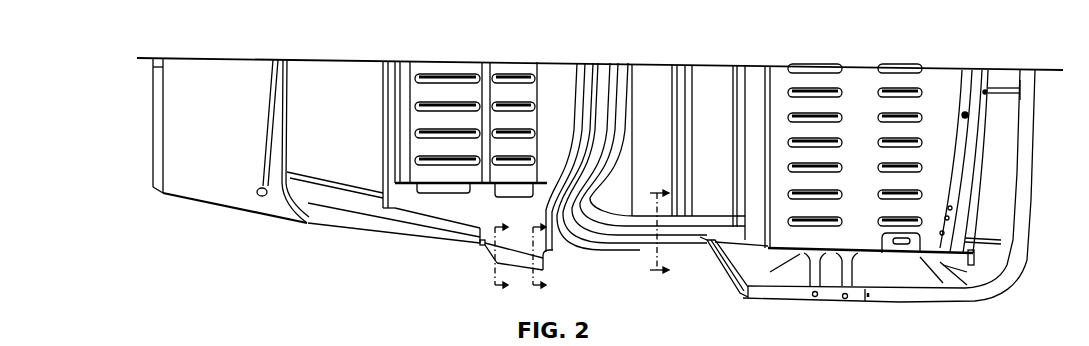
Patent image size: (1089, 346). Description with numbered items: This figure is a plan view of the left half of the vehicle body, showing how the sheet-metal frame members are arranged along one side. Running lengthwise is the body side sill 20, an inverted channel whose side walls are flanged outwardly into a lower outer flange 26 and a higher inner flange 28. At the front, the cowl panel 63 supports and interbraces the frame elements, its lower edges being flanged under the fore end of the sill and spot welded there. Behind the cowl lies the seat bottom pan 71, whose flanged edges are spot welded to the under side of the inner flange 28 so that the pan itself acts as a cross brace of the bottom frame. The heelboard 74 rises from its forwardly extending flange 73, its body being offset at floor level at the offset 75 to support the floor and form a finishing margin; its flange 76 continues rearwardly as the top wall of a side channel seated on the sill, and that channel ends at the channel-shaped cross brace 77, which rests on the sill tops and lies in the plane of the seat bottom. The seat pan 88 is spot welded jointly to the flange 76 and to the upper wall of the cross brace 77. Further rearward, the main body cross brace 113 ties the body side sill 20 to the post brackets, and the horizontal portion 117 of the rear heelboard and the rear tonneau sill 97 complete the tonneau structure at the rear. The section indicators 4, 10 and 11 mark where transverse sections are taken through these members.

The section line 4- 4 is at (651, 231).
The section line 10- 10 is at (507, 255).
The section line 11- 11 is at (547, 255).
The body side sill 20 is at (338, 202).
The outer flange 26 is at (350, 218).
The inner flange 28 is at (313, 187).
The cowl panel 63 is at (231, 140).
The seat bottom pan 71 is at (433, 97).
The forwardly extending flange 73 is at (383, 102).
The heelboard 74 is at (393, 77).
The offset 75 is at (388, 200).
The flange 76 is at (405, 70).
The cross brace 77 is at (483, 78).
The seat pan 88 is at (448, 210).
The rear tonneau sill 97 is at (985, 105).
The main body cross brace 113 is at (683, 77).
The horizontal portion 117 is at (757, 83).